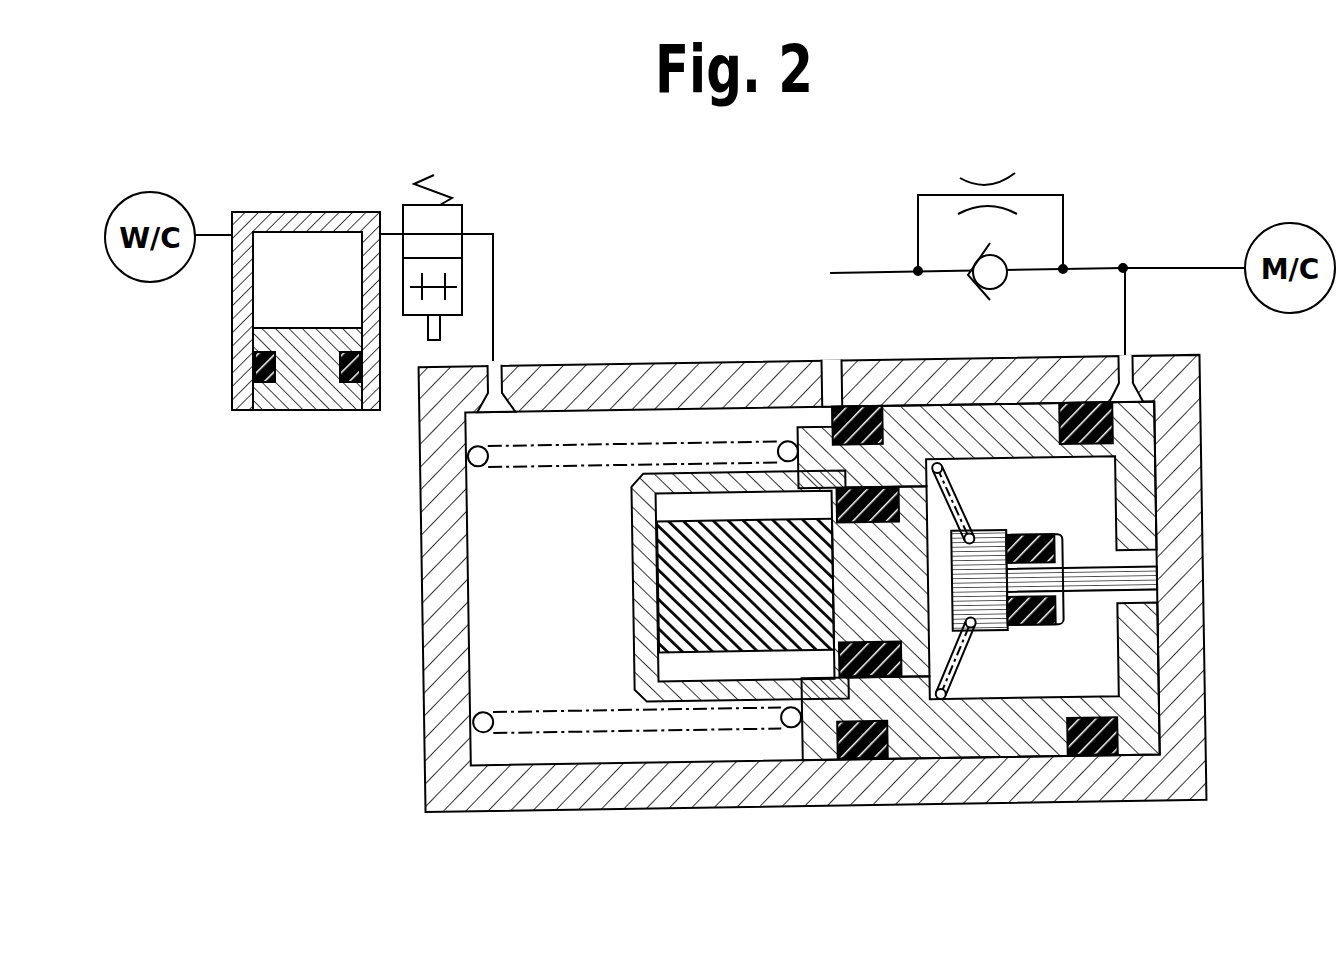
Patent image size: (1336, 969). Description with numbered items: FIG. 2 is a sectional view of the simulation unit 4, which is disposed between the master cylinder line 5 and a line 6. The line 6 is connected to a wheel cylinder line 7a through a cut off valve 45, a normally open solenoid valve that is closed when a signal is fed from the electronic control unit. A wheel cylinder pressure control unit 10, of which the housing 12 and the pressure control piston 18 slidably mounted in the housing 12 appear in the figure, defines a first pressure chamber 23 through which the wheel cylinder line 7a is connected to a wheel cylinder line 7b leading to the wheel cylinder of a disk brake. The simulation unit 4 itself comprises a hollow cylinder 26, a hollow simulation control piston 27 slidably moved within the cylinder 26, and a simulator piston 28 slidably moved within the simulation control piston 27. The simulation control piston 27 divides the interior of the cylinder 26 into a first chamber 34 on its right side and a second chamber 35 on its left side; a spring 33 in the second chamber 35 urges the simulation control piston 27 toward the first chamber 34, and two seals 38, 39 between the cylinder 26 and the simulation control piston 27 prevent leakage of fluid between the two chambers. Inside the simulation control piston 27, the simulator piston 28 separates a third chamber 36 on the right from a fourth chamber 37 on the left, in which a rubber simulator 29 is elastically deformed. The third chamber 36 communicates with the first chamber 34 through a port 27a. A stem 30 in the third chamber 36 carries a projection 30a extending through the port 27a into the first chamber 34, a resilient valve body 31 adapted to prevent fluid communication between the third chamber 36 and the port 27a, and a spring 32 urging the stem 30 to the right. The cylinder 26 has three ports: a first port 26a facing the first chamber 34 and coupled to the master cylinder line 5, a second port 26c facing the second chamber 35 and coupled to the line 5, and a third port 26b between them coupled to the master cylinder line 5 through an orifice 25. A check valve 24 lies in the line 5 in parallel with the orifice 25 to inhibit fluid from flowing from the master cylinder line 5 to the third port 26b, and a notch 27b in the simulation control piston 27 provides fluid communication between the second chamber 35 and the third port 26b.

The simulation unit 4 is at (786, 238).
The master cylinder line 5 is at (1167, 266).
The line 6 is at (486, 232).
The wheel cylinder line 7a is at (392, 233).
The wheel cylinder line 7b is at (212, 234).
The wheel cylinder pressure control unit 10 is at (266, 430).
The housing 12 is at (234, 365).
The pressure control piston 18 is at (320, 392).
The first pressure chamber 23 is at (327, 294).
The check valve 24 is at (1003, 283).
The orifice 25 is at (983, 185).
The hollow cylinder 26 is at (617, 373).
The first port 26a is at (1132, 360).
The third port 26b is at (822, 370).
The second port 26c is at (500, 380).
The simulation control piston 27 is at (1140, 453).
The port 27a is at (1137, 553).
The notch 27b is at (797, 414).
The simulator piston 28 is at (913, 655).
The simulator 29 is at (733, 642).
The stem 30 is at (996, 615).
The projection 30a is at (1137, 577).
The resilient valve body 31 is at (1034, 634).
The spring 32 is at (958, 674).
The spring 33 is at (658, 734).
The first chamber 34 is at (1160, 648).
The second chamber 35 is at (490, 630).
The third chamber 36 is at (1100, 670).
The fourth chamber 37 is at (782, 668).
The seal 38 is at (1103, 735).
The seal 39 is at (852, 740).
The cut off valve 45 is at (457, 204).